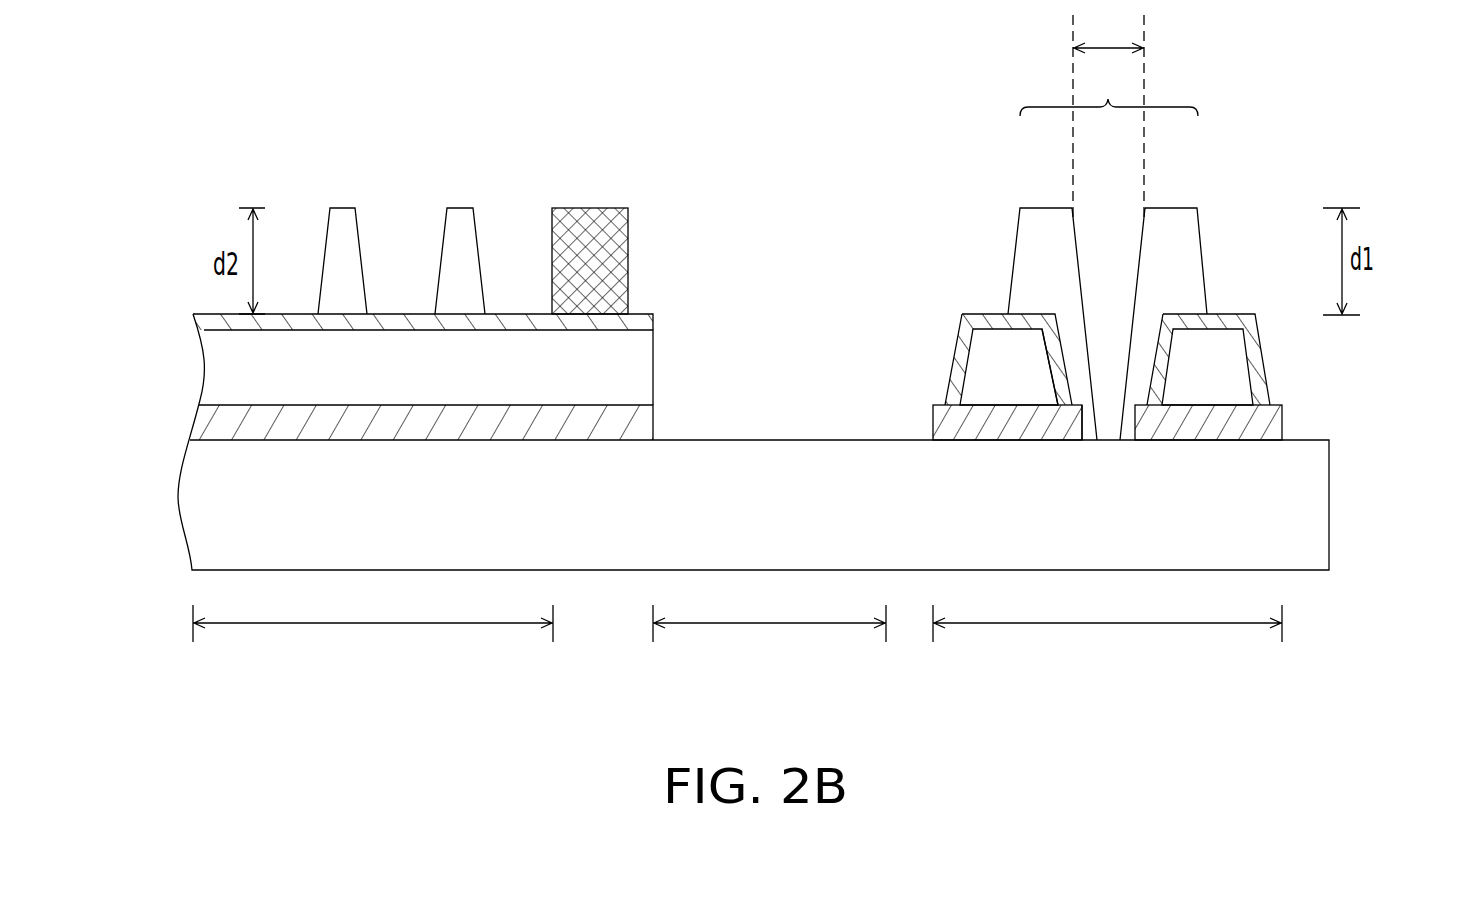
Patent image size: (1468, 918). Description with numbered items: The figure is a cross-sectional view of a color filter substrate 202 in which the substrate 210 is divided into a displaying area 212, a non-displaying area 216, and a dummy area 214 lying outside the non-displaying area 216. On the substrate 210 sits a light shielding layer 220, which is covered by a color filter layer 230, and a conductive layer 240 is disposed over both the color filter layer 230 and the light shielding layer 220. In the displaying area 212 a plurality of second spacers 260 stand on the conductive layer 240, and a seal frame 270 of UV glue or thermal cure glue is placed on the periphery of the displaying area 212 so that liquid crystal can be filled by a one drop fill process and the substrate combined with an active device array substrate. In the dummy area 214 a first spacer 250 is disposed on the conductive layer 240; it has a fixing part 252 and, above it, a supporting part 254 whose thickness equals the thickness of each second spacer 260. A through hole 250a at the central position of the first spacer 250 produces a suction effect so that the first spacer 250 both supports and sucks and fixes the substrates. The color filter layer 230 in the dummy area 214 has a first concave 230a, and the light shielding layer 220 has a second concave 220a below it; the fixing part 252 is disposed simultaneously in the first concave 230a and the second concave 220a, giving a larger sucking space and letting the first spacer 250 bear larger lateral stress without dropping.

The color filter substrate 202 is at (1392, 725).
The substrate 210 is at (1277, 523).
The displaying area 212 is at (372, 627).
The dummy area 214 is at (1107, 627).
The non-displaying area 216 is at (768, 627).
The light shielding layer 220 is at (230, 427).
The second concave 220a is at (1097, 432).
The color filter layer 230 is at (237, 370).
The first concave 230a is at (1068, 378).
The conductive layer 240 is at (205, 323).
The first spacer 250 is at (1109, 112).
The through hole 250a is at (1109, 226).
The fixing part 252 is at (1142, 335).
The supporting part 254 is at (1182, 262).
The second spacer 260 is at (463, 227).
The seal frame 270 is at (588, 228).